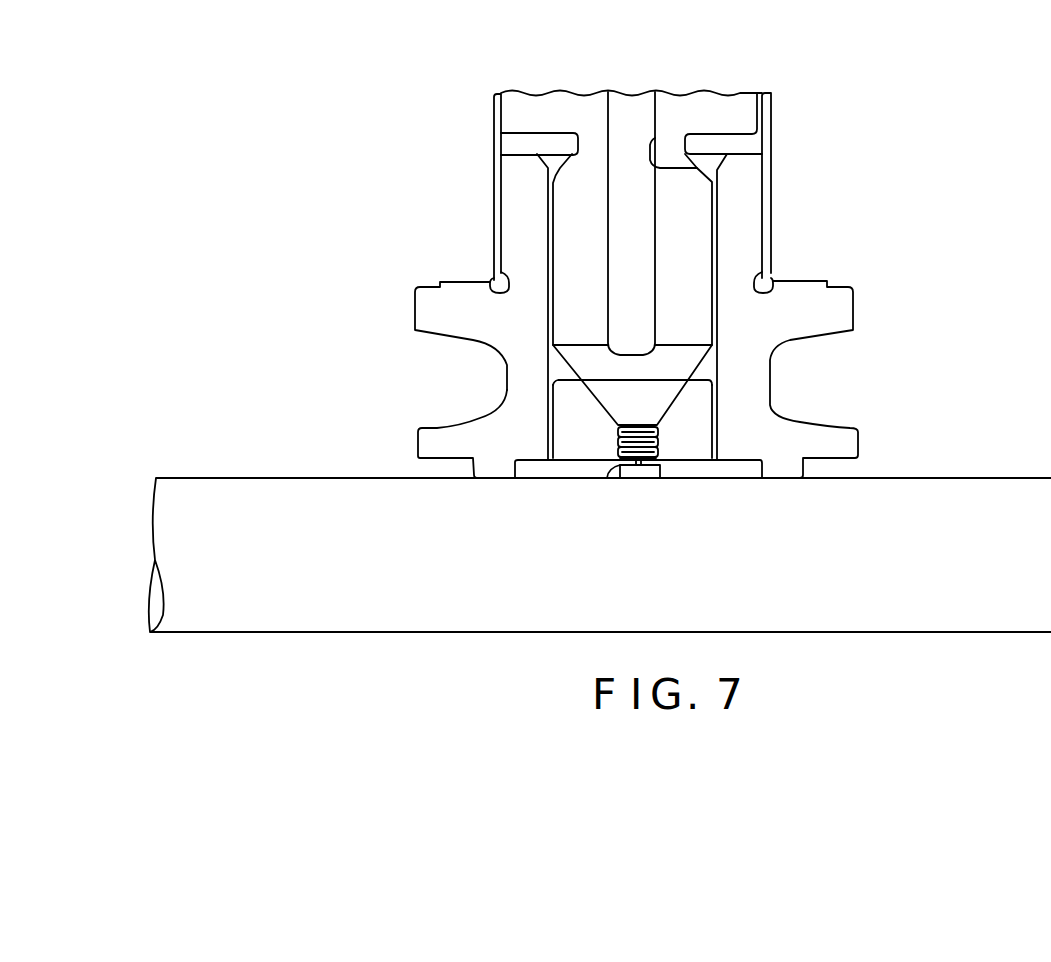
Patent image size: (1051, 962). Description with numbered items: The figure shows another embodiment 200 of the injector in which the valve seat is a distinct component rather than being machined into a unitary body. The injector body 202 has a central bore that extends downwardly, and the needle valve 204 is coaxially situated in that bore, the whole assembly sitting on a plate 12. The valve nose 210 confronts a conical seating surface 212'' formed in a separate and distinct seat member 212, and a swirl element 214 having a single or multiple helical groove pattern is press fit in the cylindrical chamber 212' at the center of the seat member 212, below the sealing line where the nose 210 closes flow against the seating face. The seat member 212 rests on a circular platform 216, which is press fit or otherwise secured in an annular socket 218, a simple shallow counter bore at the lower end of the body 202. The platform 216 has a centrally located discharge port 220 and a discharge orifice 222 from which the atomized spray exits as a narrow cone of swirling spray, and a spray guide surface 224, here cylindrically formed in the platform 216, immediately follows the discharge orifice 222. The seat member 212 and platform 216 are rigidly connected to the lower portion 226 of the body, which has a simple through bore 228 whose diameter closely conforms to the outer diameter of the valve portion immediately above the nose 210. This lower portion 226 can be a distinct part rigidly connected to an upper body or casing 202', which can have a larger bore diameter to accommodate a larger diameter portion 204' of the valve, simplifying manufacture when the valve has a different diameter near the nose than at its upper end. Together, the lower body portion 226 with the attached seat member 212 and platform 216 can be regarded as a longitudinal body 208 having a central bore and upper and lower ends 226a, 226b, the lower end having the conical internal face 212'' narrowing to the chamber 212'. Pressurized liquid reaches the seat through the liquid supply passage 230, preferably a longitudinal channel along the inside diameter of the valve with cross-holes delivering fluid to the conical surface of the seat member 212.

The substrate plate 12 is at (189, 477).
The embodiment 200 is at (447, 86).
The injector body 202 is at (686, 273).
The upper body or casing 202' is at (819, 162).
The needle valve 204 is at (783, 219).
The larger diameter portion of the valve 204' is at (478, 124).
The nozzle body 208 is at (348, 337).
The valve nose 210 is at (687, 363).
The seat member 212 is at (720, 420).
The chamber 212' is at (566, 405).
The conical seating surface 212'' is at (506, 366).
The swirl element 214 is at (658, 440).
The circular platform 216 is at (566, 477).
The annular socket 218 is at (528, 480).
The discharge port 220 is at (609, 480).
The discharge orifice 222 is at (652, 472).
The spray guide surface 224 is at (629, 480).
The lower portion of the body 226 is at (805, 322).
The upper end 226a is at (517, 172).
The lower end 226b is at (437, 428).
The through bore 228 is at (706, 276).
The liquid supply passage 230 is at (623, 238).